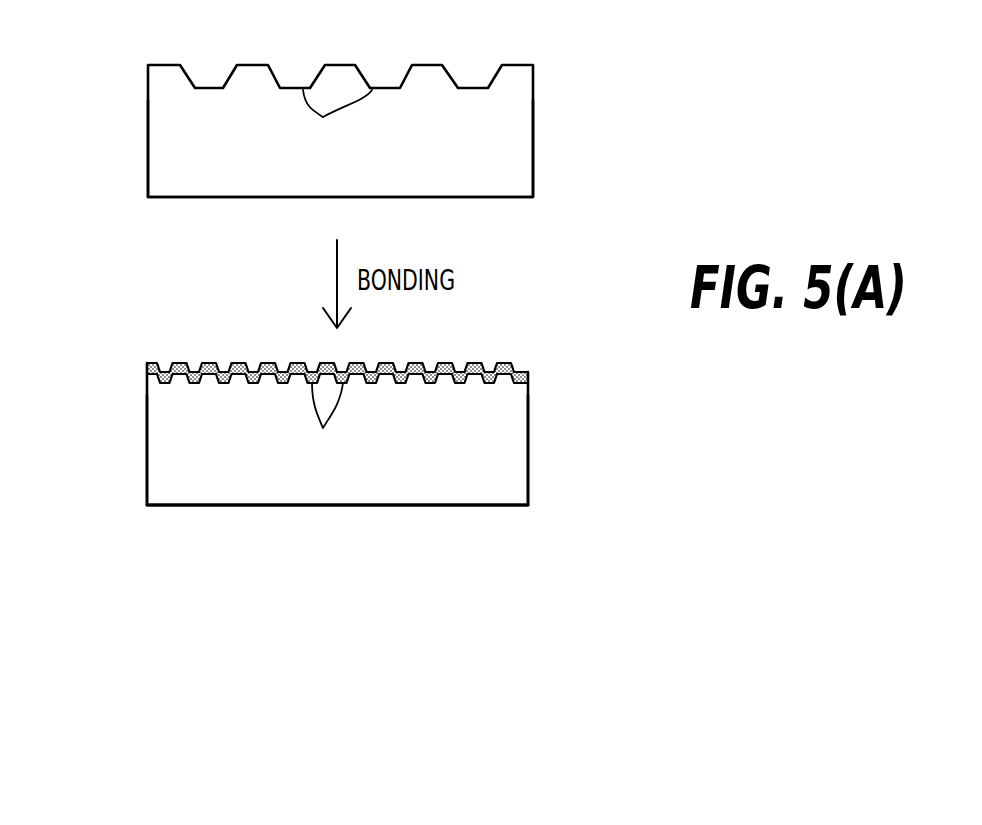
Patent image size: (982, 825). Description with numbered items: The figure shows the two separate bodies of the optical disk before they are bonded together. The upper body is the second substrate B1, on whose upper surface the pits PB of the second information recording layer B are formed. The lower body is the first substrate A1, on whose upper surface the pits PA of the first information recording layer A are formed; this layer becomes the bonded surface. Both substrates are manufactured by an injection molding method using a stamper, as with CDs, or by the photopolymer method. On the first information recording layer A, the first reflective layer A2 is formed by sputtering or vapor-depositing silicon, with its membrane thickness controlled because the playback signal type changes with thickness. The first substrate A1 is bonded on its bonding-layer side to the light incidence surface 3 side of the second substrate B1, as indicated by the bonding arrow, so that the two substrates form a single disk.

The second information recording layer B is at (129, 80).
The second substrate B1 is at (512, 139).
The pits PB is at (337, 127).
The first information recording layer A is at (122, 380).
The first substrate A1 is at (503, 431).
The first reflective layer A2 is at (530, 377).
The pits PA is at (325, 428).
The light incidence surface 3 is at (505, 512).